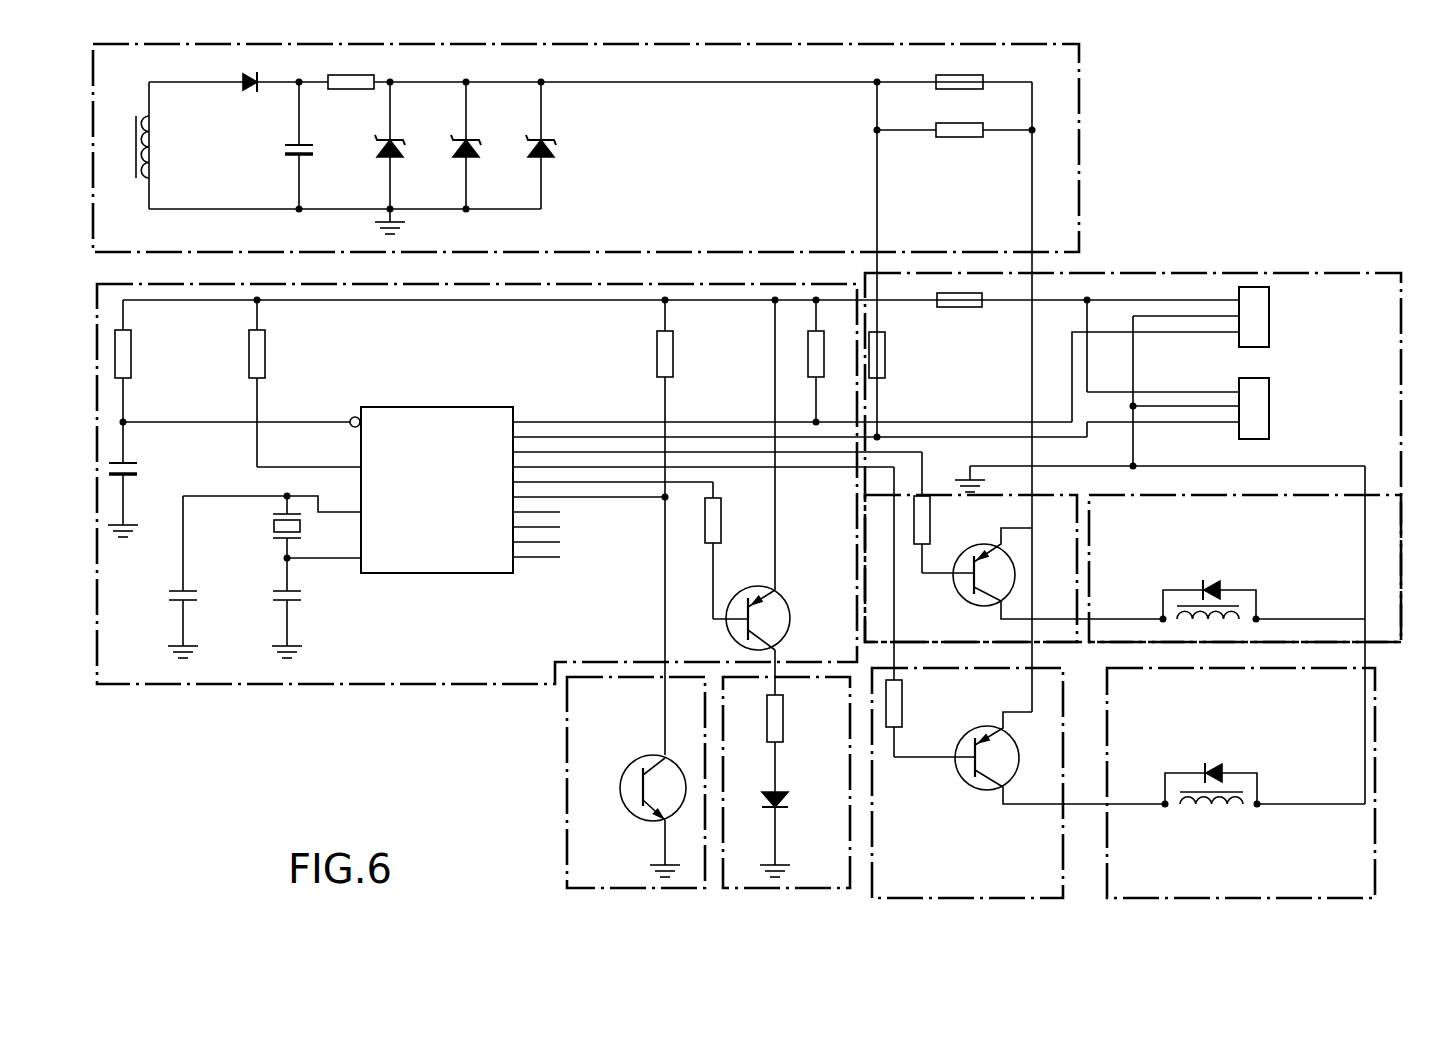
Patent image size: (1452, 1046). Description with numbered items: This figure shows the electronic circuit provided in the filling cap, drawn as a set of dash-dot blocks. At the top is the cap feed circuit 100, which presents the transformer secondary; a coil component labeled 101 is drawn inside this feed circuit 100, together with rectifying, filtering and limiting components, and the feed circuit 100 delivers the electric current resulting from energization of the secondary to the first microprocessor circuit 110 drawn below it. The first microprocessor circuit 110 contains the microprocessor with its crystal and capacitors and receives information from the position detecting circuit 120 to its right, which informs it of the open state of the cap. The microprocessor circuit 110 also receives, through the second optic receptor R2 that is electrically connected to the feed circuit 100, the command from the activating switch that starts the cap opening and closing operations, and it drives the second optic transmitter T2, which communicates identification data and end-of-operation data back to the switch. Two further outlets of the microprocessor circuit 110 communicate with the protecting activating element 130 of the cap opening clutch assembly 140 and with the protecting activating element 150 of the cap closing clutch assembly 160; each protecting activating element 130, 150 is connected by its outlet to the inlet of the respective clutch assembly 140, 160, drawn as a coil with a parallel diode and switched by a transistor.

The cap feed circuit 100 is at (675, 148).
The transformer secondary coil 101 is at (156, 148).
The first microprocessor circuit 110 is at (584, 544).
The position detecting circuit 120 is at (1242, 262).
The protecting activating element 130 is at (966, 630).
The cap opening clutch assembly 140 is at (1243, 541).
The protecting activating element 150 is at (977, 841).
The cap closing clutch assembly 160 is at (1346, 833).
The second optic receptor R2 is at (600, 765).
The second optic transmitter T2 is at (818, 858).